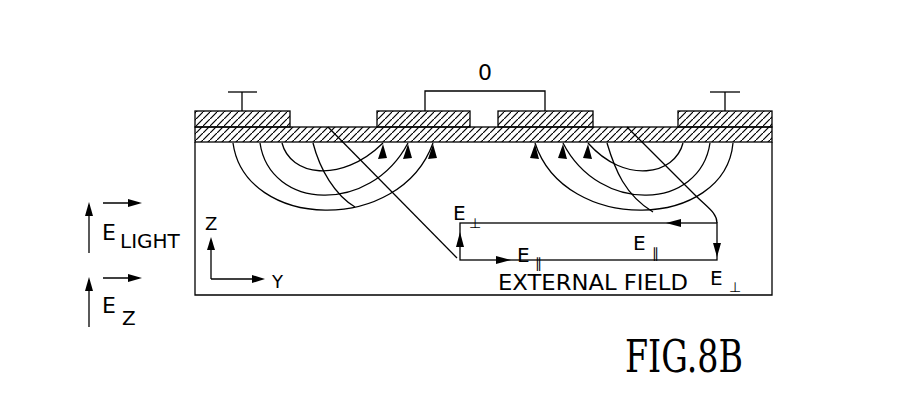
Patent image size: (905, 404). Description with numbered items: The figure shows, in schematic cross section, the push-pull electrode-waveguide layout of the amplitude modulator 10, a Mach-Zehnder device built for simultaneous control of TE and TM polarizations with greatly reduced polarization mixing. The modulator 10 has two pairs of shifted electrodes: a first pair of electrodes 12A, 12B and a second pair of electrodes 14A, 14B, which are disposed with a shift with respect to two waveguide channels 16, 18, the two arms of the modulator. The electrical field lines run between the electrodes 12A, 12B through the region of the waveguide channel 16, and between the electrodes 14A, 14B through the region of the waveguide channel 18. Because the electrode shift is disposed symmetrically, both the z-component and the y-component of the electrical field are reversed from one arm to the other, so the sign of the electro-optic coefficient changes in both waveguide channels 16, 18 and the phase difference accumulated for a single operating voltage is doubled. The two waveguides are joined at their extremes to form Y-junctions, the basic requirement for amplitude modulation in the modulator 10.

The amplitude modulator 10 is at (152, 89).
The electrode 12A is at (272, 111).
The electrode 12B is at (400, 111).
The electrode 14A is at (568, 111).
The electrode 14B is at (755, 111).
The waveguide channel 16 is at (350, 181).
The waveguide channel 18 is at (680, 170).